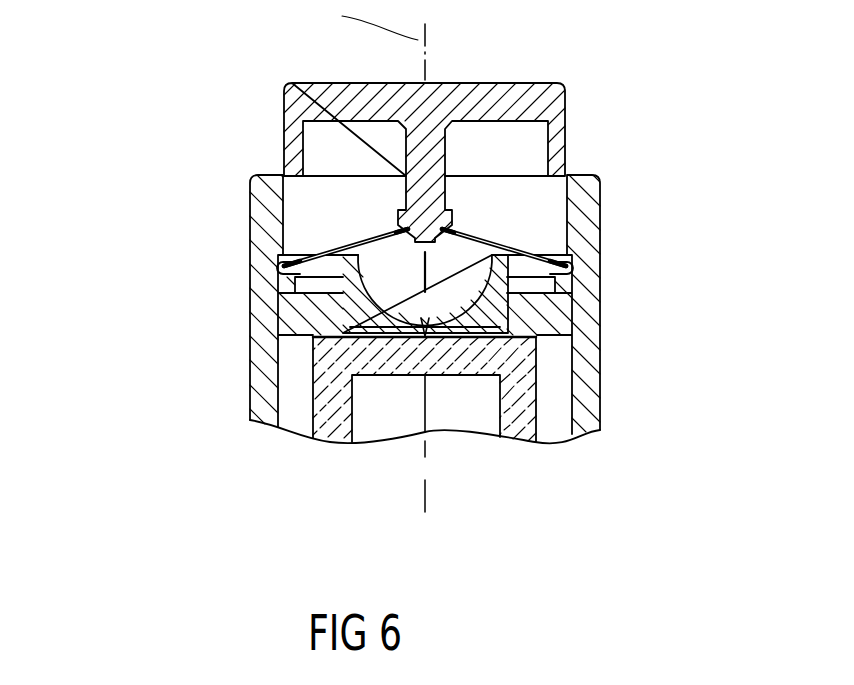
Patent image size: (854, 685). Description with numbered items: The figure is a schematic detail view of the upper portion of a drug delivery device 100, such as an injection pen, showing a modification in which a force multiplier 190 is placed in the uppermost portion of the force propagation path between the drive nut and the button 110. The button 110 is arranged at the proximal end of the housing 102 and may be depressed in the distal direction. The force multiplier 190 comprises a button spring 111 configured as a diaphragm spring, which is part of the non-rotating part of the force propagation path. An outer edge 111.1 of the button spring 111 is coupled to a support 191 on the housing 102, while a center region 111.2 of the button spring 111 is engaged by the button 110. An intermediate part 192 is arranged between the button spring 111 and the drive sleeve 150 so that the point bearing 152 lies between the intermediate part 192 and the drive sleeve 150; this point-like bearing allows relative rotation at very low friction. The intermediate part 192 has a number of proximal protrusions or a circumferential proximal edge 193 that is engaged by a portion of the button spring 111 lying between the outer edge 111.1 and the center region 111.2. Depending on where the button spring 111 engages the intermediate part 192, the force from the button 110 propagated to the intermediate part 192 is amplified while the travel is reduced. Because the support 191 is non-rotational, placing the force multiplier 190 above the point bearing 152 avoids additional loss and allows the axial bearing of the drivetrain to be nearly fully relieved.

The drug delivery device 100 is at (212, 70).
The button 110 is at (563, 99).
The force multiplier 190 is at (376, 232).
The button spring 111 is at (525, 258).
The outer edge 111.1 is at (276, 265).
The center region 111.2 is at (453, 225).
The support 191 is at (298, 268).
The intermediate part 192 is at (498, 302).
The circumferential proximal edge 193 is at (430, 266).
The housing 102 is at (588, 400).
The point bearing 152 is at (423, 338).
The drive sleeve 150 is at (520, 412).